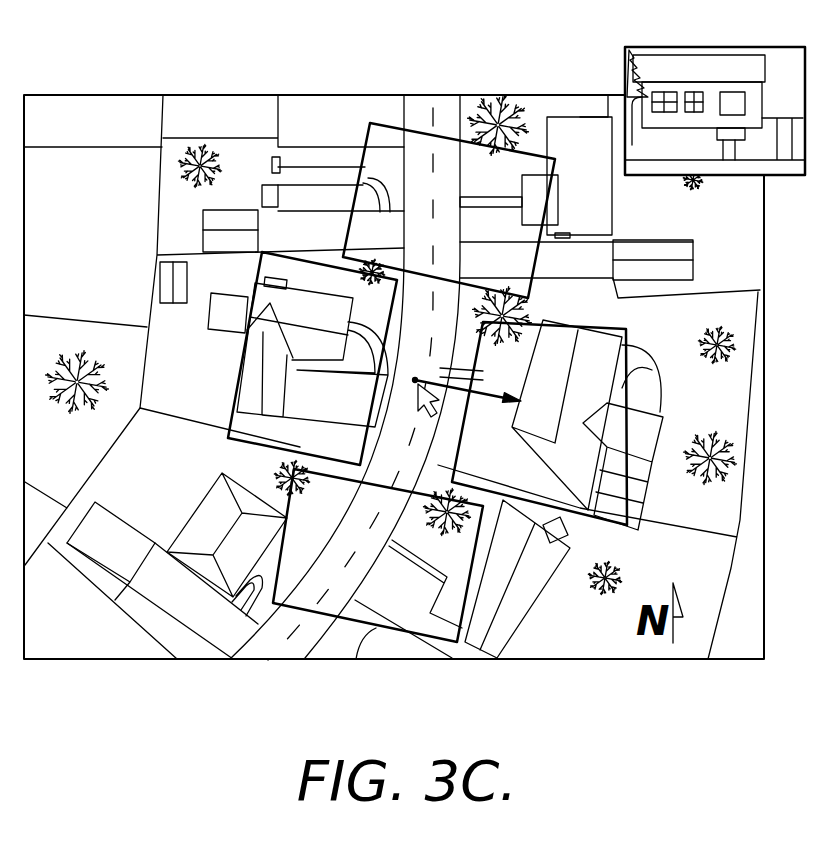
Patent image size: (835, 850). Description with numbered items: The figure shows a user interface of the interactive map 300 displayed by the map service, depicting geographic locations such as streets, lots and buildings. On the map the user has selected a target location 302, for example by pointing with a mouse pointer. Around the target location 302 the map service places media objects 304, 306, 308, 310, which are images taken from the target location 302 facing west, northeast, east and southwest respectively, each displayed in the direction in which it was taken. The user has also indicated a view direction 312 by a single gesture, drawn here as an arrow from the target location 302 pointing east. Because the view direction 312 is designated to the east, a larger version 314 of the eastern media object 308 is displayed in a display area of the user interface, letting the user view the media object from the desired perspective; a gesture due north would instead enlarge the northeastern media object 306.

The interactive map 300 is at (292, 52).
The target location 302 is at (416, 378).
The media object 304 is at (228, 420).
The media object 306 is at (360, 137).
The media object 308 is at (645, 373).
The media object 310 is at (372, 627).
The view direction 312 is at (480, 402).
The larger version of the media object 314 is at (720, 45).